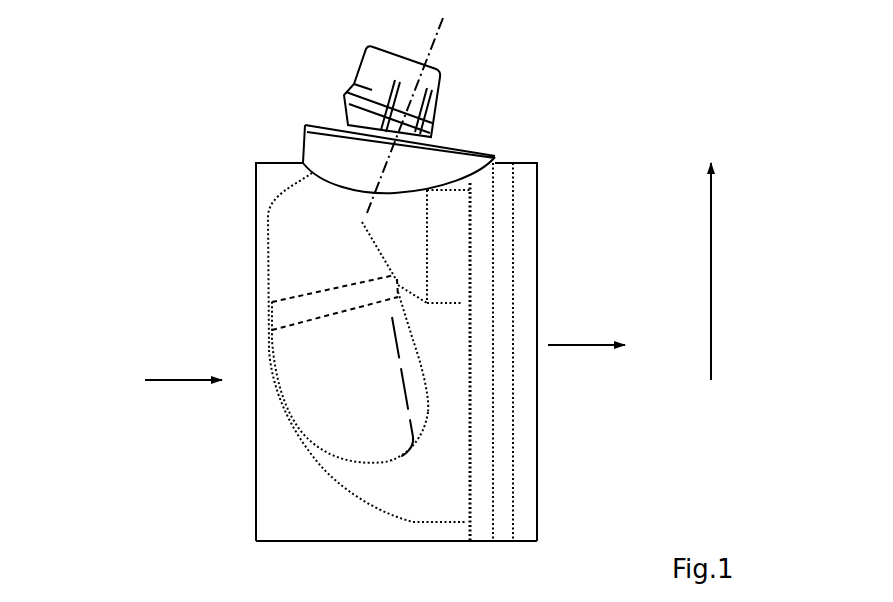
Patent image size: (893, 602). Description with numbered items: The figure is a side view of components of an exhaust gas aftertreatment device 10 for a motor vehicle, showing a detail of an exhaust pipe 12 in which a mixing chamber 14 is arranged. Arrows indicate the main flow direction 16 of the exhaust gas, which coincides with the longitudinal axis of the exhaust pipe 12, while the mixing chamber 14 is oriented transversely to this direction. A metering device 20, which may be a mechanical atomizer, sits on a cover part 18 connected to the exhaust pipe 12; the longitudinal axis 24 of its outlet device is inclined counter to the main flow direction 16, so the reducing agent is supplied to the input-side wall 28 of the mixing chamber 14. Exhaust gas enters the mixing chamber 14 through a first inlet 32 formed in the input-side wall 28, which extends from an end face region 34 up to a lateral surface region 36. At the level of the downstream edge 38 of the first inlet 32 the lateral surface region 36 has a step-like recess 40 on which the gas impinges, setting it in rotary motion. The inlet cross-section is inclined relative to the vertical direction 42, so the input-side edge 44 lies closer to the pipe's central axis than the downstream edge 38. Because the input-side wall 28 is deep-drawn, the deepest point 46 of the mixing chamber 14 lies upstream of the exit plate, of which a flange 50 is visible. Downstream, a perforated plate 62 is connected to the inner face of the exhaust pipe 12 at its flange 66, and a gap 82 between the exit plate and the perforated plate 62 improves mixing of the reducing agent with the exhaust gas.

The exhaust gas aftertreatment device 10 is at (236, 114).
The exhaust pipe 12 is at (274, 539).
The mixing chamber 14 is at (272, 188).
The main flow direction 16 is at (163, 378).
The cover part 18 is at (452, 156).
The metering device 20 is at (471, 82).
The longitudinal axis 24 is at (433, 44).
The input-side wall 28 is at (296, 248).
The first inlet 32 is at (283, 307).
The end face region 34 is at (283, 397).
The lateral surface region 36 is at (380, 408).
The downstream edge 38 is at (396, 283).
The recess 40 is at (418, 373).
The vertical direction 42 is at (714, 256).
The input-side edge 44 is at (262, 320).
The deepest point 46 is at (422, 522).
The flange 50 is at (473, 530).
The perforated plate 62 is at (515, 197).
The flange 66 is at (512, 512).
The gap 82 is at (482, 236).